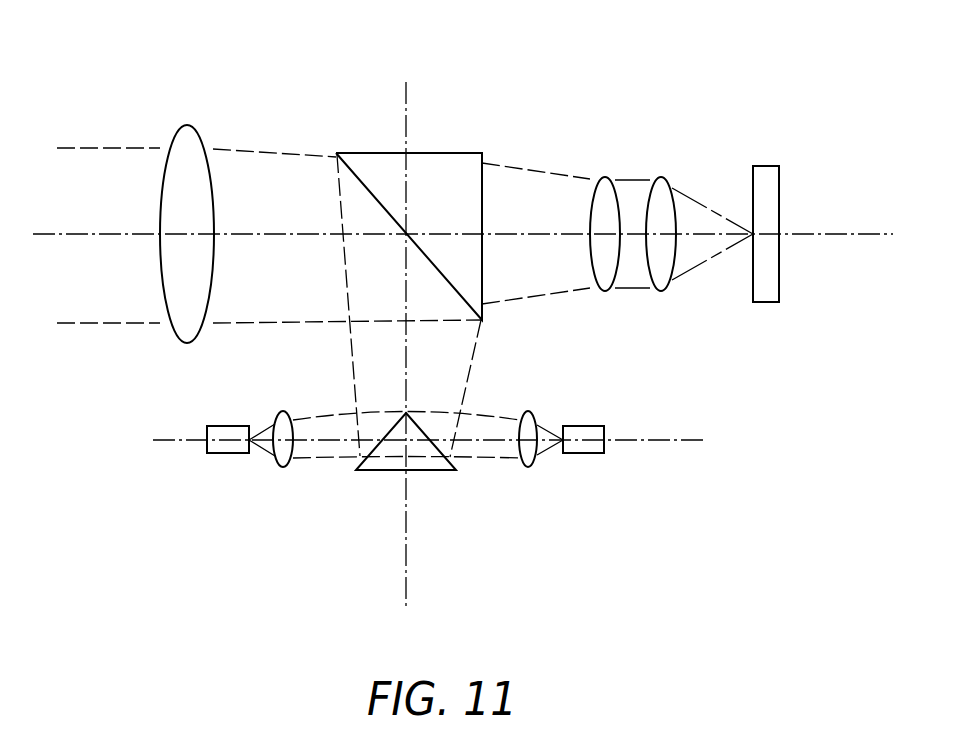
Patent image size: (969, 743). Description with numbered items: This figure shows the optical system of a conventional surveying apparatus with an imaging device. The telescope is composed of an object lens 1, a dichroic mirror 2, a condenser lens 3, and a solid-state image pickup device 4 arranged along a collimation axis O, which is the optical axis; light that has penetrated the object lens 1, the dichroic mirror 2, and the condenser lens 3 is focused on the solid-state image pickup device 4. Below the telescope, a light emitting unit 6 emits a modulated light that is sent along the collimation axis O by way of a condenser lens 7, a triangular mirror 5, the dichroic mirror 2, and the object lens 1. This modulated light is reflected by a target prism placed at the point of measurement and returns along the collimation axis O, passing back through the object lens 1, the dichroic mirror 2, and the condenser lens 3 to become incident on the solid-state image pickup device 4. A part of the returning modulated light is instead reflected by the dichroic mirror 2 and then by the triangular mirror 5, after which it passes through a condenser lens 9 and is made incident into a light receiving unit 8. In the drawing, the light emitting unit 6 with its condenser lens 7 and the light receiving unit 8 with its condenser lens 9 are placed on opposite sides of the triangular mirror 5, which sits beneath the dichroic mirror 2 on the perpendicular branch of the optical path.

The object lens 1 is at (187, 125).
The dichroic mirror 2 is at (450, 153).
The condenser lens 3 is at (604, 148).
The solid-state image pickup device 4 is at (768, 166).
The collimation axis O is at (822, 233).
The triangular mirror 5 is at (387, 470).
The light emitting unit 6 is at (590, 453).
The condenser lens 7 is at (528, 467).
The light receiving unit 8 is at (230, 453).
The condenser lens 9 is at (283, 467).